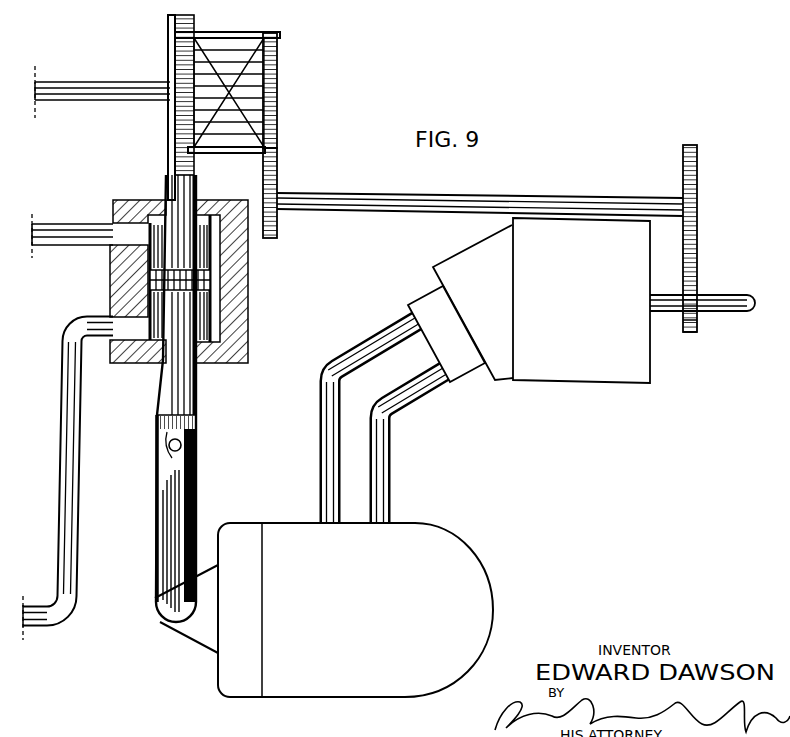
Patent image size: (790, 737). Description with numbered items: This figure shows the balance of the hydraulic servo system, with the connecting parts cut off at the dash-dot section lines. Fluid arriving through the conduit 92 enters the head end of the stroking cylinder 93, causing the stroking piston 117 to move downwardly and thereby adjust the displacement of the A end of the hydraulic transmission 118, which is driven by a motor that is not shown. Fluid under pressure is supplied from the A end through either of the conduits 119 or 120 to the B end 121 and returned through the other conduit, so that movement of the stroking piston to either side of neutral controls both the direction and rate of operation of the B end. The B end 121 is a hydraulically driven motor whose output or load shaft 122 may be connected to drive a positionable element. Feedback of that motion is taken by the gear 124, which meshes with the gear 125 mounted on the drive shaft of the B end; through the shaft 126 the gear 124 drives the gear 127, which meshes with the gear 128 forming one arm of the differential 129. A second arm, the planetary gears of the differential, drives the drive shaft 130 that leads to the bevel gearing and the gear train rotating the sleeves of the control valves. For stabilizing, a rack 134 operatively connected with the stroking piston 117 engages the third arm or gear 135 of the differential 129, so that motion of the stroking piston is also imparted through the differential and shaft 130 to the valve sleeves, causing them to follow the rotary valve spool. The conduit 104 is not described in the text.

The conduit 92 is at (74, 238).
The stroking cylinder 93 is at (124, 251).
The pipe 104 is at (77, 582).
The stroking piston 117 is at (212, 282).
The hydraulic transmission 118 is at (476, 590).
The conduit 119 is at (384, 443).
The conduit 120 is at (326, 443).
The B end 121 is at (634, 340).
The load shaft 122 is at (746, 298).
The gear 124 is at (700, 193).
The gear 125 is at (690, 333).
The shaft 126 is at (456, 198).
The gear 127 is at (278, 183).
The gear 128 is at (277, 118).
The differential 129 is at (250, 34).
The drive shaft 130 is at (140, 99).
The rack 134 is at (172, 26).
The gear 135 is at (175, 124).